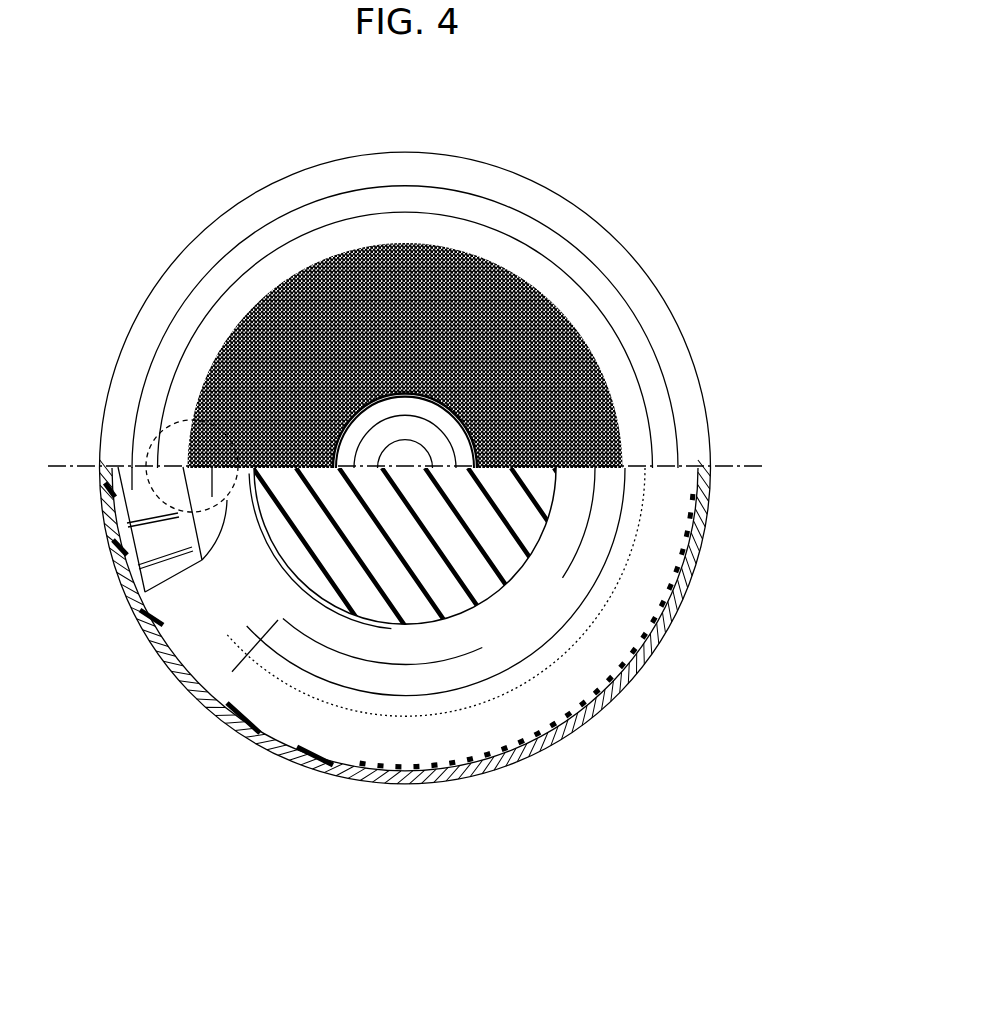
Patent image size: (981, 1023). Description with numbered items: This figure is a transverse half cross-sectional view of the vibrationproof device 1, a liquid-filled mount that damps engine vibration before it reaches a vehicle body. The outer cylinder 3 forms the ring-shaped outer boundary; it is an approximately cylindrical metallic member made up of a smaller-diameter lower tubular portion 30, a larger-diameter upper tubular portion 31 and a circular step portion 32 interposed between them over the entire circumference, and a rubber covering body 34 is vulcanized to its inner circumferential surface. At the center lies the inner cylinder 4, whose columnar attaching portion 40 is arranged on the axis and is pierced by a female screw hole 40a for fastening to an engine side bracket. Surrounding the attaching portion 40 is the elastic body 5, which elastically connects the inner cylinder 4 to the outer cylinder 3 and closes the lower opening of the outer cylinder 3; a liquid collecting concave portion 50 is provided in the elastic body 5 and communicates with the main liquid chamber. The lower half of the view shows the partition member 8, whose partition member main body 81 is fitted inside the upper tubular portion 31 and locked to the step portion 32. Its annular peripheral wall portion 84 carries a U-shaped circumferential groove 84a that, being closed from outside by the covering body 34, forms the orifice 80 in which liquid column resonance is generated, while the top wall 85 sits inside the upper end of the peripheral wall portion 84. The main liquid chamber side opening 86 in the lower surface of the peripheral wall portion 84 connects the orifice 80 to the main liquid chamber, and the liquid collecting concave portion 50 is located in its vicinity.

The vibrationproof device 1 is at (693, 172).
The outer cylinder 3 is at (394, 426).
The lower tubular portion 30 is at (538, 210).
The upper tubular portion 31 is at (627, 247).
The step portion 32 is at (582, 223).
The covering body 34 is at (237, 720).
The inner cylinder 4 is at (338, 434).
The attaching portion 40 is at (368, 413).
The female screw hole 40a is at (408, 446).
The elastic body 5 is at (437, 258).
The liquid collecting concave portion 50 is at (178, 422).
The partition member 8 is at (300, 748).
The orifice 80 is at (519, 592).
The partition member main body 81 is at (428, 694).
The peripheral wall portion 84 is at (396, 742).
The circumferential groove 84a is at (623, 577).
The top wall 85 is at (450, 640).
The main liquid chamber side opening 86 is at (164, 624).